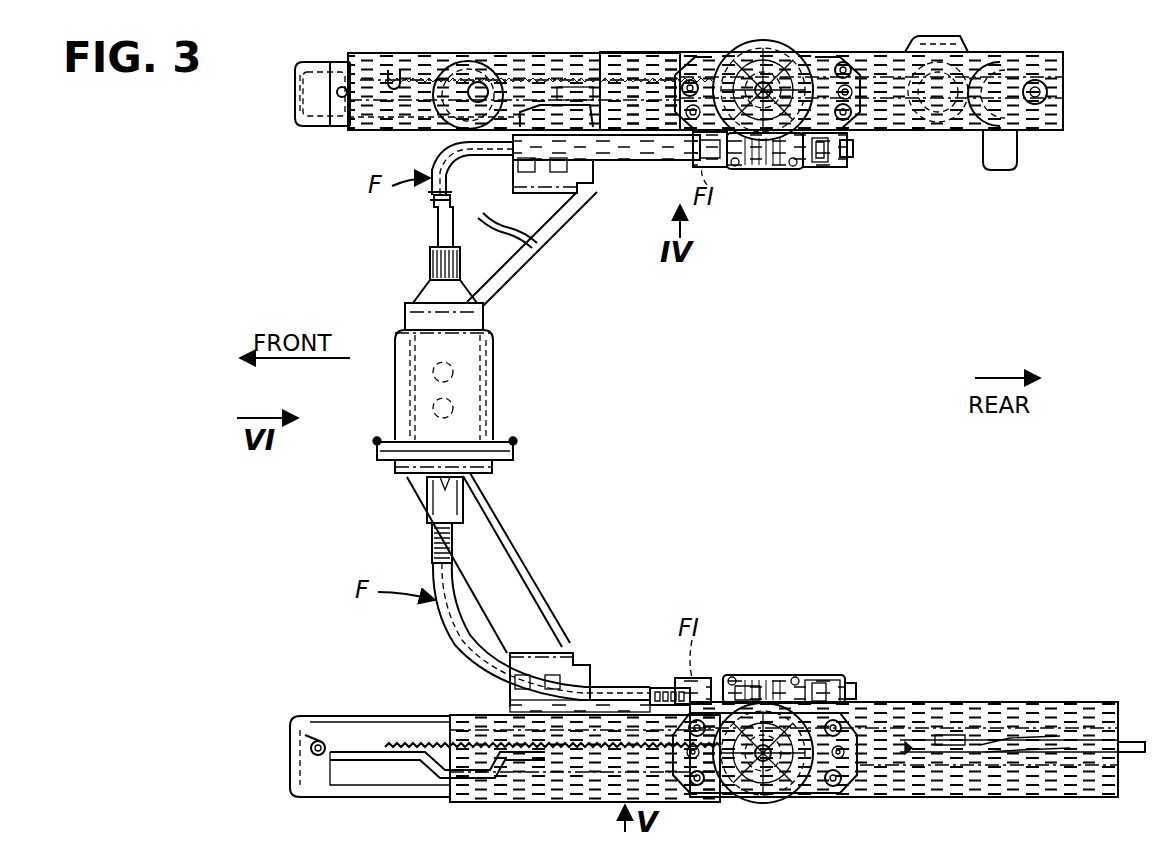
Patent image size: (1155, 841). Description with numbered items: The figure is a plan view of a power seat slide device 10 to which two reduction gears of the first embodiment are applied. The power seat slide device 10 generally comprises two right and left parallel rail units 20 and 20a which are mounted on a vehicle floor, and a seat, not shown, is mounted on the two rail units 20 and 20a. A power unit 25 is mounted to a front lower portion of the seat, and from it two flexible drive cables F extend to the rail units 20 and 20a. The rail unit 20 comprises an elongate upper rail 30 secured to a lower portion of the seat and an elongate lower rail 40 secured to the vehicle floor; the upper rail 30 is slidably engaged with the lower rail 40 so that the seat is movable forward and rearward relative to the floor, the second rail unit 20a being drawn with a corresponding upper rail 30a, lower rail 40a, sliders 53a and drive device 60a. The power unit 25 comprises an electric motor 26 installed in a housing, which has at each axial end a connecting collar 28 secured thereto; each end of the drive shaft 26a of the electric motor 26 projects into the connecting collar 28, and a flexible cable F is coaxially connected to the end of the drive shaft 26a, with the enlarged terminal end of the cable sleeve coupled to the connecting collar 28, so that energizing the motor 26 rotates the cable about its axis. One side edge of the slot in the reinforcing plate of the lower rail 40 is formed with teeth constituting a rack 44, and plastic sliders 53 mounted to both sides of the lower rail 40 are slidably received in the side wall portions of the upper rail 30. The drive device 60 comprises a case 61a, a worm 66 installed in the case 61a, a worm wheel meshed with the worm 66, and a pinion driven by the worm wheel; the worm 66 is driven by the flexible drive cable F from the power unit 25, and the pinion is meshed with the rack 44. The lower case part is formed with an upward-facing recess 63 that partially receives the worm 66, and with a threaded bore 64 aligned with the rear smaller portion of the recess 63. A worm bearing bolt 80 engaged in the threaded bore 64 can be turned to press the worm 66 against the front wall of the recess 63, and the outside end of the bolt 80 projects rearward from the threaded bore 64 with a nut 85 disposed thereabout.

The power seat slide device 10 is at (775, 372).
The rail unit 20 is at (578, 52).
The rail unit 20a is at (970, 700).
The power unit 25 is at (395, 385).
The electric motor 26 is at (485, 385).
The drive shaft 26a is at (462, 500).
The connecting collar 28 is at (480, 485).
The upper rail 30 is at (428, 55).
The inner rail (second) 30a is at (475, 712).
The lower rail 40 is at (320, 58).
The end cap (second) 40a is at (380, 712).
The rack 44 is at (396, 82).
The plastic slider 53 is at (345, 60).
The end member (second) 53a is at (315, 715).
The drive device 60 is at (805, 54).
The drive unit (second) 60a is at (795, 674).
The case 61a is at (765, 48).
The recess 63 is at (752, 160).
The threaded bore 64 is at (812, 165).
The worm 66 is at (775, 170).
The worm bearing bolt 80 is at (822, 165).
The nut 85 is at (843, 160).